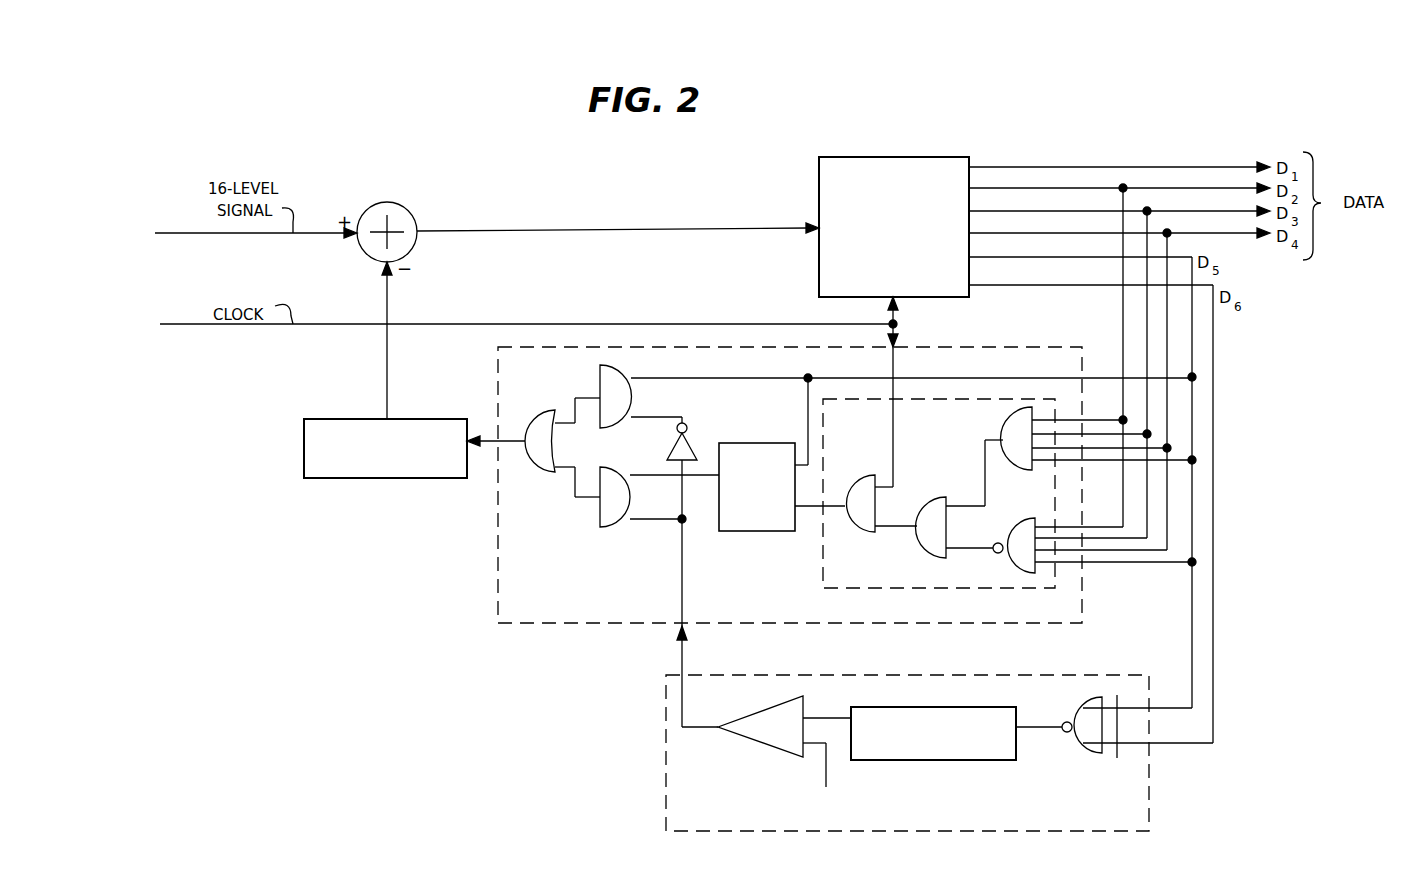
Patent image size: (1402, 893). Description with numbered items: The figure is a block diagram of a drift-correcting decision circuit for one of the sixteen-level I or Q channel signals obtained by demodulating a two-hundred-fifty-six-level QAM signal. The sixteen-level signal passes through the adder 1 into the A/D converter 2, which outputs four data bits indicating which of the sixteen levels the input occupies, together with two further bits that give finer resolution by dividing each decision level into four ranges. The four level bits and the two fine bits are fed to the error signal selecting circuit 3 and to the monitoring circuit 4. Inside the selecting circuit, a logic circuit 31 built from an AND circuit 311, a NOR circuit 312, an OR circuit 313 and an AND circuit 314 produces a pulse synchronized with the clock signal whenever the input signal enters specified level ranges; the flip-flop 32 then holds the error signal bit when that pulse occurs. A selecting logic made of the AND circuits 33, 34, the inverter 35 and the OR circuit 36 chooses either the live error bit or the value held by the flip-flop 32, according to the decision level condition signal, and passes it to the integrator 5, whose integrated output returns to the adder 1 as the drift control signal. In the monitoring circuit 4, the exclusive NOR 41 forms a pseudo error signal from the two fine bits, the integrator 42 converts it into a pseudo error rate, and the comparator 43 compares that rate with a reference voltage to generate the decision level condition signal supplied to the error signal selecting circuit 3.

The adder 1 is at (410, 207).
The A/D converter 2 is at (906, 158).
The error signal selecting circuit 3 is at (1013, 346).
The monitoring circuit 4 is at (1097, 673).
The integrator 5 is at (438, 420).
The logic circuit 31 is at (822, 556).
The flip-flop 32 is at (762, 443).
The AND circuit 33 is at (603, 390).
The AND circuit 34 is at (613, 530).
The inverter 35 is at (692, 450).
The OR circuit 36 is at (543, 417).
The exclusive NOR 41 is at (1092, 755).
The integrator 42 is at (905, 762).
The comparator 43 is at (776, 748).
The AND circuit 311 is at (1007, 443).
The NOR circuit 312 is at (1010, 564).
The OR circuit 313 is at (936, 498).
The AND circuit 314 is at (858, 480).